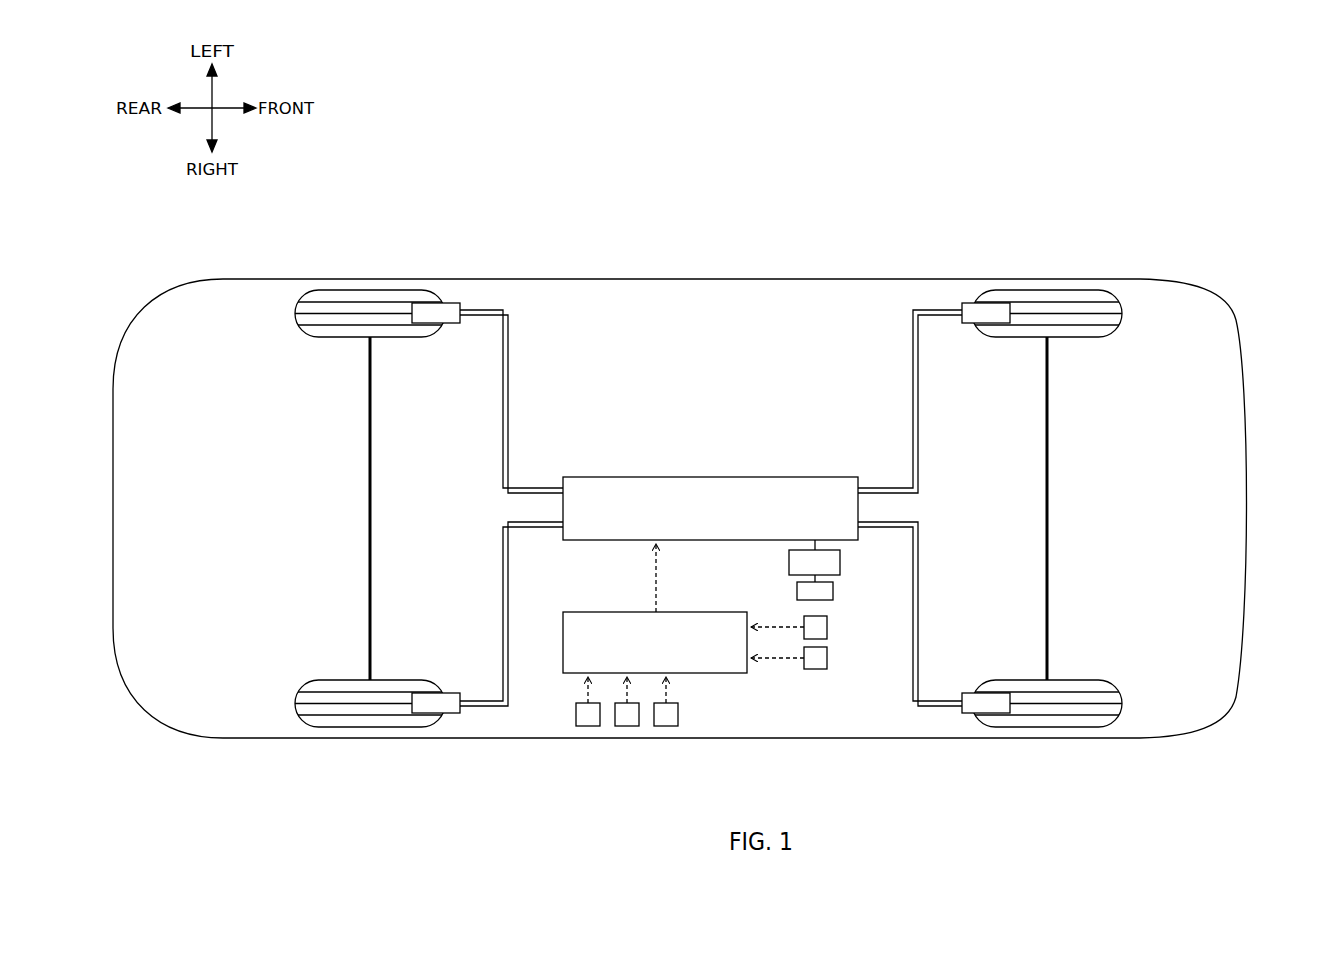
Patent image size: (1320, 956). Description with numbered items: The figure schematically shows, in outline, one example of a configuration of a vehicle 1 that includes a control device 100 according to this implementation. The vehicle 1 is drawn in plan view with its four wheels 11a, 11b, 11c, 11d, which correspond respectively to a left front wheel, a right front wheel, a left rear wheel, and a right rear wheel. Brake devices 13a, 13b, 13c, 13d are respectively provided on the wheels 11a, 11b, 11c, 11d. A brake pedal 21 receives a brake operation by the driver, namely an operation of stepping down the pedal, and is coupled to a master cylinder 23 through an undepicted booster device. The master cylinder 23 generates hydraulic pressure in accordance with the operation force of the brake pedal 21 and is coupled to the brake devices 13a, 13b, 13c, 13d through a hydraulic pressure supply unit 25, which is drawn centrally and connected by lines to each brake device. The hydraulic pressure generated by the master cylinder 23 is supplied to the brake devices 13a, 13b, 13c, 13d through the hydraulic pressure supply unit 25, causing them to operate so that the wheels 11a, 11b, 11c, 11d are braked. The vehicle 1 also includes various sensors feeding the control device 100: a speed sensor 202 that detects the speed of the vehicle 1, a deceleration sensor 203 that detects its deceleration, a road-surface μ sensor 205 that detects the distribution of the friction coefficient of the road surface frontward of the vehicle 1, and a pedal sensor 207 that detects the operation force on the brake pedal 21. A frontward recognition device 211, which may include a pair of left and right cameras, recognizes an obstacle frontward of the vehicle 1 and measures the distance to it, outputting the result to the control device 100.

The vehicle 1 is at (1081, 93).
The wheel 11a is at (1045, 290).
The wheel 11b is at (1045, 727).
The wheel 11c is at (372, 290).
The wheel 11d is at (375, 738).
The brake device 13a is at (967, 303).
The brake device 13b is at (965, 713).
The brake device 13c is at (452, 303).
The brake device 13d is at (452, 713).
The hydraulic pressure supply unit 25 is at (815, 477).
The brake pedal 21 is at (840, 562).
The master cylinder 23 is at (833, 593).
The control device 100 is at (727, 663).
The speed sensor 202 is at (574, 726).
The deceleration sensor 203 is at (619, 726).
The road-surface μ sensor 205 is at (667, 726).
The pedal sensor 207 is at (823, 628).
The frontward recognition device 211 is at (814, 669).